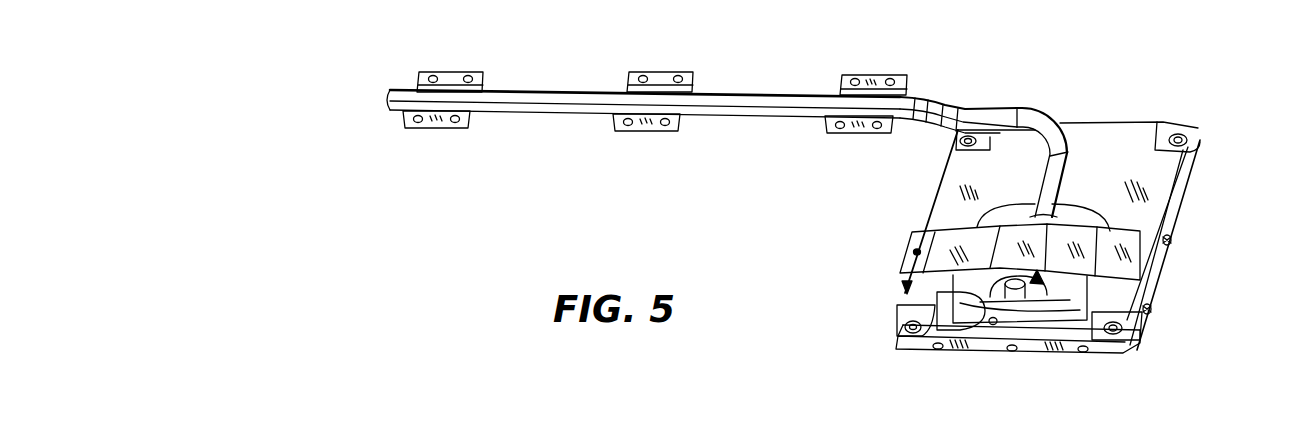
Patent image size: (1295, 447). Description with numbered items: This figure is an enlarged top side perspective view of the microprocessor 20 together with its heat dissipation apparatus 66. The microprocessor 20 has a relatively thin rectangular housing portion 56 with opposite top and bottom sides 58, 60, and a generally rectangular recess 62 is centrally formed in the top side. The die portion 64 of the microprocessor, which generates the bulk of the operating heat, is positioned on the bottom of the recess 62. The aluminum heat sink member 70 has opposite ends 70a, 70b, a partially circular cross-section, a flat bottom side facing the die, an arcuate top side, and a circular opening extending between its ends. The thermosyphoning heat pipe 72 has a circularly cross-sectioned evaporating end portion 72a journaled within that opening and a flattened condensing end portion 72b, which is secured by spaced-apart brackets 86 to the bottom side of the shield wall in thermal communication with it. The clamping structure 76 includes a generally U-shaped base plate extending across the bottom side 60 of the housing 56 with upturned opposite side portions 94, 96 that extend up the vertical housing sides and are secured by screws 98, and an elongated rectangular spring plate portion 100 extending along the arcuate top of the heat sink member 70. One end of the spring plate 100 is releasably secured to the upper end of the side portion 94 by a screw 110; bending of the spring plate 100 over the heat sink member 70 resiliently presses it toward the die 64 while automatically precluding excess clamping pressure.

The microprocessor 20 is at (1181, 193).
The housing portion 56 is at (950, 187).
The top side 58 is at (1097, 127).
The bottom side 60 is at (1067, 355).
The recess 62 is at (993, 325).
The die portion 64 is at (1028, 292).
The heat dissipation apparatus 66 is at (770, 58).
The heat sink member 70 is at (1037, 290).
The heat sink member end 70a is at (1020, 204).
The heat sink member end 70b is at (900, 299).
The thermosyphoning heat pipe 72 is at (582, 91).
The evaporating end portion 72a is at (1077, 180).
The condensing end portion 72b is at (781, 113).
The clamping structure 76 is at (1178, 268).
The brackets 86 is at (455, 72).
The upturned side portion 94 is at (900, 286).
The upturned side portion 96 is at (1150, 276).
The screws 98 is at (1172, 242).
The spring plate portion 100 is at (952, 247).
The screw 110 is at (914, 252).